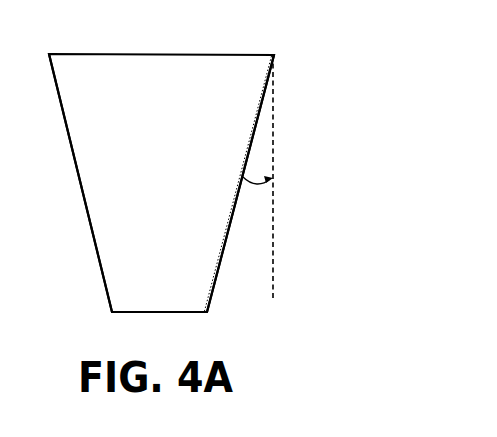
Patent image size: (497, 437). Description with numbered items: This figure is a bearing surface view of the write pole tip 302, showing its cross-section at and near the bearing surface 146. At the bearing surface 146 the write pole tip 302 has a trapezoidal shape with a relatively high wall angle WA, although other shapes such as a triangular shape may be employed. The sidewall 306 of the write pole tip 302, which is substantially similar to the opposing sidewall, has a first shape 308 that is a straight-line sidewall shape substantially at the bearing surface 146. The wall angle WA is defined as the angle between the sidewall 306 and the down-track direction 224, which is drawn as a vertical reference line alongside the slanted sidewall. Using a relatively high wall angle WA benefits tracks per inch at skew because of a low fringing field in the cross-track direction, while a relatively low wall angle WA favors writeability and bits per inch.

The write pole tip 302 is at (118, 44).
The opposing sidewall 306 is at (83, 205).
The first shape 308 is at (215, 290).
The down-track direction 224 is at (273, 133).
The wall angle WA is at (256, 198).
The bearing surface 146 is at (143, 165).